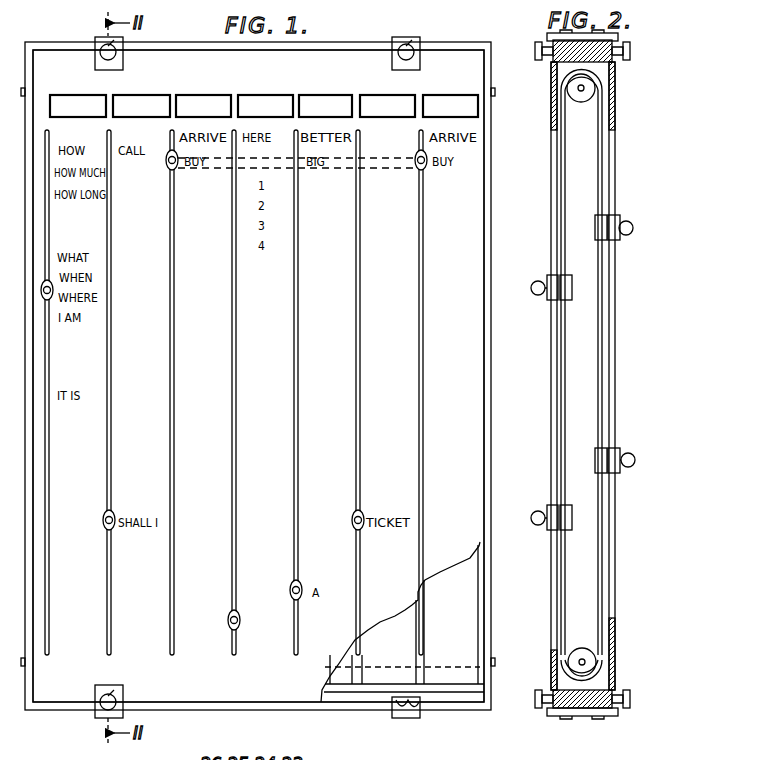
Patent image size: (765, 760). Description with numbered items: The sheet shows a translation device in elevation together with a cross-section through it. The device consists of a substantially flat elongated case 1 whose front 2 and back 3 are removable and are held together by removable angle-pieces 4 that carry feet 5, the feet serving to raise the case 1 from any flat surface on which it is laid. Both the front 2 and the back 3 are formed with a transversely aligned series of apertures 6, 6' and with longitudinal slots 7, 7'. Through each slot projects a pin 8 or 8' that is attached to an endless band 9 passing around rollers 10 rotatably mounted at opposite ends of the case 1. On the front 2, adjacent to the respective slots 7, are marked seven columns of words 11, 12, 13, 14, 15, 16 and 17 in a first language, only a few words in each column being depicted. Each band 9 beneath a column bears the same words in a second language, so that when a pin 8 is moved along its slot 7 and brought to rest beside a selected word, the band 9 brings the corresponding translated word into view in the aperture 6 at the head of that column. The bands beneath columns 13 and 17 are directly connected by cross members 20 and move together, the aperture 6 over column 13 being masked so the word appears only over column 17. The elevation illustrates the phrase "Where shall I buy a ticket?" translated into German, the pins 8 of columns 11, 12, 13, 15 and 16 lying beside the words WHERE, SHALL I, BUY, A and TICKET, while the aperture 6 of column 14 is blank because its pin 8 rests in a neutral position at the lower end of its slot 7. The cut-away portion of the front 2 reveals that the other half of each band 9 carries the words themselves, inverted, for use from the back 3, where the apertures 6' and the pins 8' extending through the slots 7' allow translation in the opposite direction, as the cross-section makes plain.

In FIG. 1, the case 1 is at (489, 425).
In FIG. 1, the front 2 is at (465, 228).
In FIG. 2, the front 2 is at (551, 424).
In FIG. 2, the back 3 is at (609, 400).
In FIG. 1, the angle-pieces 4 is at (122, 60).
In FIG. 2, the angle-pieces 4 is at (553, 38).
In FIG. 1, the feet 5 is at (100, 46).
In FIG. 2, the feet 5 is at (535, 47).
In FIG. 1, the apertures 6 is at (280, 92).
In FIG. 2, the apertures 6 is at (567, 96).
In FIG. 2, the apertures 6' is at (594, 652).
In FIG. 1, the longitudinal slots 7 is at (432, 392).
In FIG. 2, the longitudinal slots 7 is at (551, 402).
In FIG. 2, the longitudinal slots 7' is at (622, 344).
In FIG. 2, the pin 8 is at (538, 403).
In FIG. 2, the pin 8' is at (630, 344).
In FIG. 1, the endless band 9 is at (470, 620).
In FIG. 2, the endless band 9 is at (573, 186).
In FIG. 2, the rollers 10 is at (585, 97).
In FIG. 1, the column of words 11 is at (62, 392).
In FIG. 1, the column of words 12 is at (125, 392).
In FIG. 1, the column of words 13 is at (191, 392).
In FIG. 1, the column of words 14 is at (250, 392).
In FIG. 1, the column of words 15 is at (312, 392).
In FIG. 1, the column of words 16 is at (374, 489).
In FIG. 1, the column of words 17 is at (437, 309).
In FIG. 1, the cross members 20 is at (393, 167).